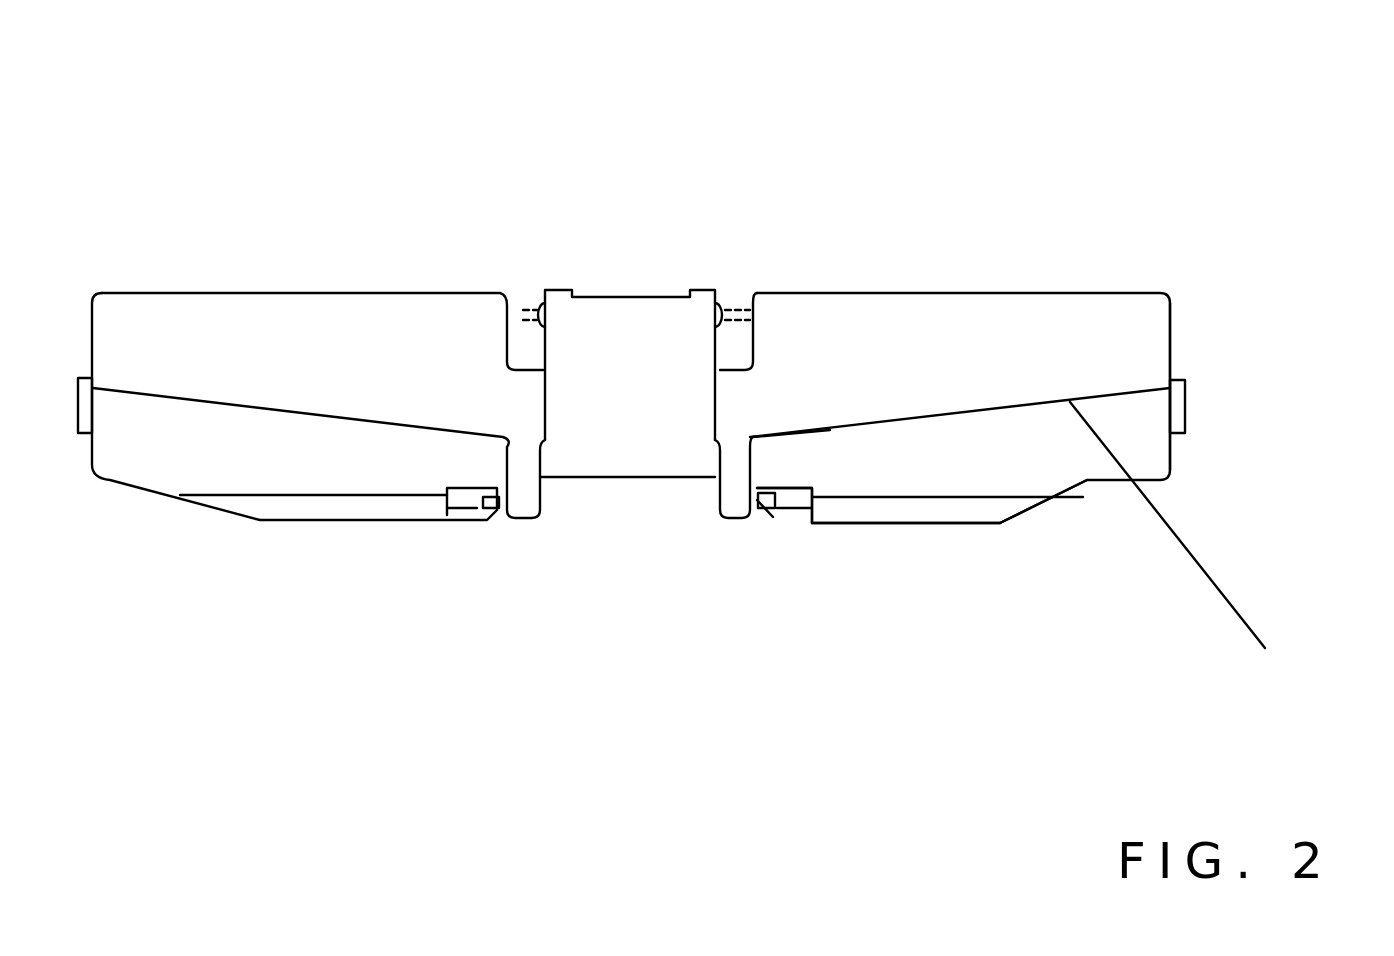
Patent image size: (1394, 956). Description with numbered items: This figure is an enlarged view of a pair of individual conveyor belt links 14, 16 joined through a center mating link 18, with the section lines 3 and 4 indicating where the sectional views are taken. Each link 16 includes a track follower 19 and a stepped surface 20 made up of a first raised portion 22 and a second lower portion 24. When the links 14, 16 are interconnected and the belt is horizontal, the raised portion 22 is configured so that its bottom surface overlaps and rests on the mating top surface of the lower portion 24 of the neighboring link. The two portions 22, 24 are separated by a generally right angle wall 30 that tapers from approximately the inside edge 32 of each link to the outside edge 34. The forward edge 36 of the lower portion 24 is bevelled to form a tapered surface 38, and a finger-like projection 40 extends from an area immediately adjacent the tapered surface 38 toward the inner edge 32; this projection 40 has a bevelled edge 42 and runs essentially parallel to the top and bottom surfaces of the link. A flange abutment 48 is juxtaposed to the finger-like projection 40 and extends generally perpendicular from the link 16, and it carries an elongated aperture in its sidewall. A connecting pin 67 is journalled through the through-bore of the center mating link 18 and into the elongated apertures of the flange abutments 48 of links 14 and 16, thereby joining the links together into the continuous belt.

The link 14 is at (242, 312).
The link 16 is at (882, 317).
The center mating link 18 is at (659, 307).
The track follower 19 is at (1185, 410).
The stepped surface 20 is at (1016, 342).
The first raised portion 22 is at (942, 381).
The second lower portion 24 is at (1040, 477).
The right angle wall 30 is at (1265, 648).
The inside edge 32 is at (717, 463).
The outside edge 34 is at (1170, 340).
The forward edge 36 is at (932, 522).
The tapered surface 38 is at (857, 508).
The finger-like projection 40 is at (774, 517).
The bevelled edge 42 is at (760, 503).
The flange abutment 48 is at (733, 487).
The connecting pin 67 is at (517, 305).
The section line 3- 3 is at (796, 685).
The section line 4- 4 is at (633, 622).